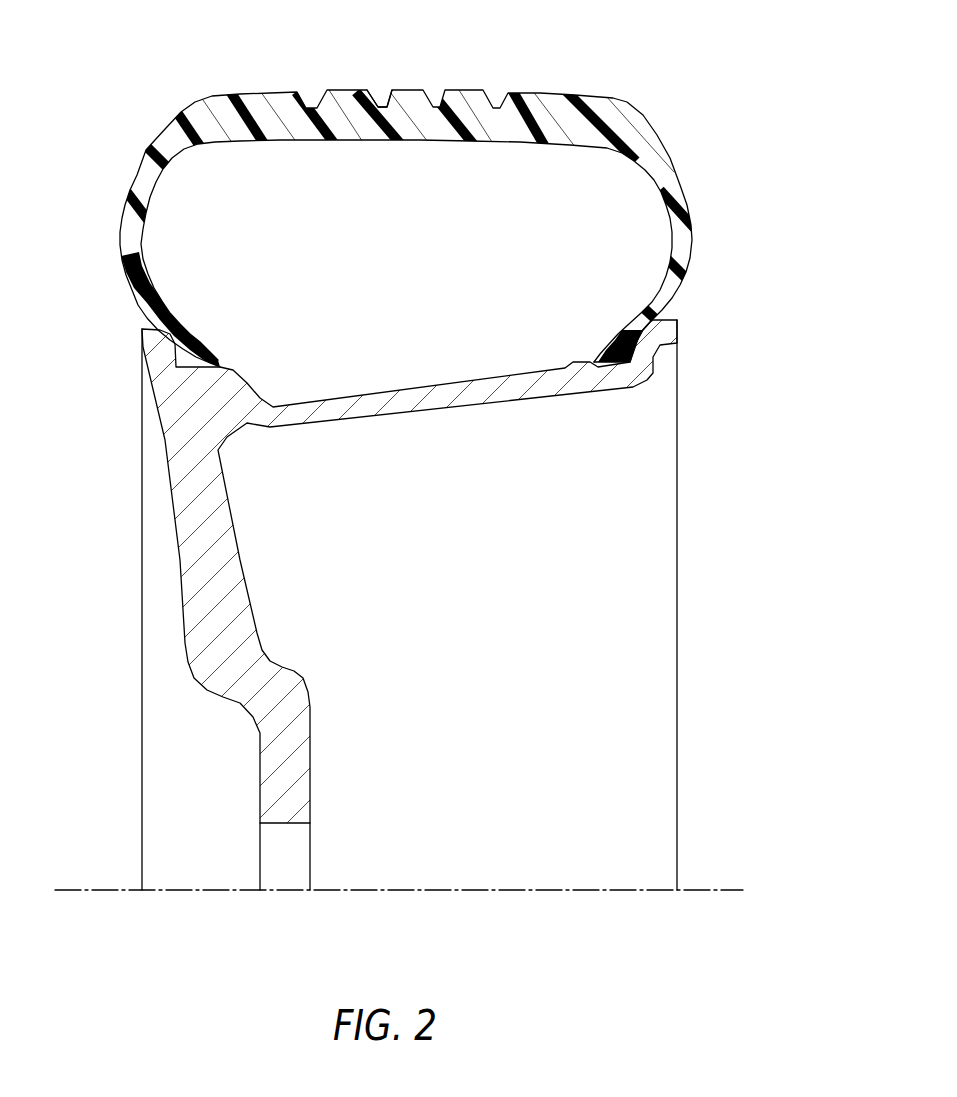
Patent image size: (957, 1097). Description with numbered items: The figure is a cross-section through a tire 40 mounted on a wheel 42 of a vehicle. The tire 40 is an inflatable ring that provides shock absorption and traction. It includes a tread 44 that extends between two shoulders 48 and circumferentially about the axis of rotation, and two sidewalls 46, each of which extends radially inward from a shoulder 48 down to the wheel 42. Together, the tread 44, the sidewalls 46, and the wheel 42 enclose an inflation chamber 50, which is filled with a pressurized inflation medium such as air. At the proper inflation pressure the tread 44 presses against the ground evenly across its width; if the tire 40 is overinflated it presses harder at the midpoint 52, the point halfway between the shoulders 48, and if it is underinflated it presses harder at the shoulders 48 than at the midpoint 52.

The tire 40 is at (699, 169).
The wheel 42 is at (677, 333).
The tread 44 is at (527, 92).
The sidewall 46 is at (120, 230).
The shoulder 48 is at (163, 123).
The inflation chamber 50 is at (399, 254).
The midpoint 52 is at (407, 90).